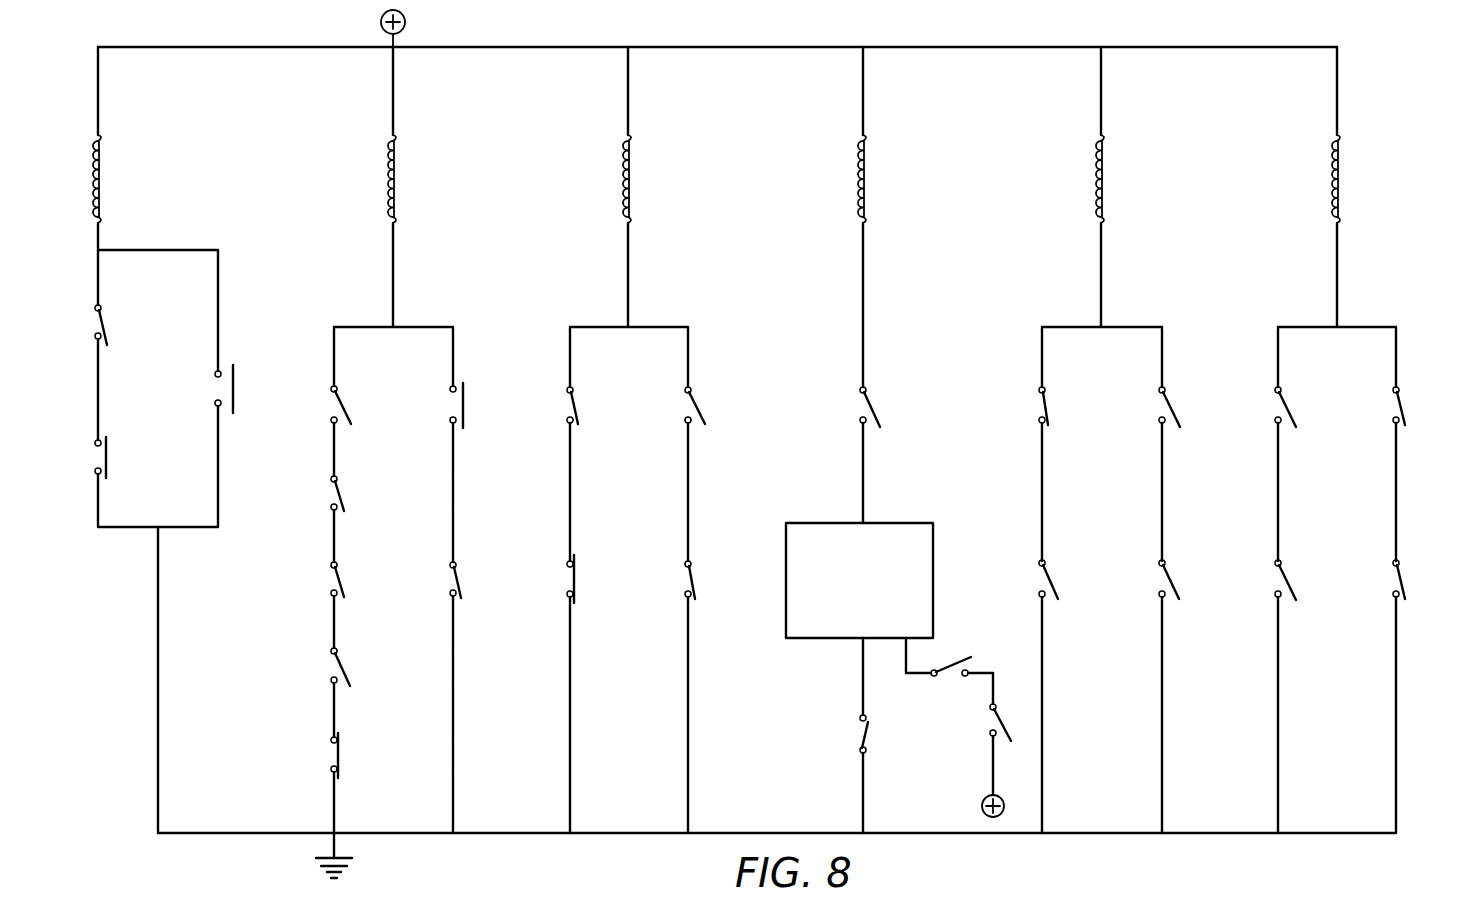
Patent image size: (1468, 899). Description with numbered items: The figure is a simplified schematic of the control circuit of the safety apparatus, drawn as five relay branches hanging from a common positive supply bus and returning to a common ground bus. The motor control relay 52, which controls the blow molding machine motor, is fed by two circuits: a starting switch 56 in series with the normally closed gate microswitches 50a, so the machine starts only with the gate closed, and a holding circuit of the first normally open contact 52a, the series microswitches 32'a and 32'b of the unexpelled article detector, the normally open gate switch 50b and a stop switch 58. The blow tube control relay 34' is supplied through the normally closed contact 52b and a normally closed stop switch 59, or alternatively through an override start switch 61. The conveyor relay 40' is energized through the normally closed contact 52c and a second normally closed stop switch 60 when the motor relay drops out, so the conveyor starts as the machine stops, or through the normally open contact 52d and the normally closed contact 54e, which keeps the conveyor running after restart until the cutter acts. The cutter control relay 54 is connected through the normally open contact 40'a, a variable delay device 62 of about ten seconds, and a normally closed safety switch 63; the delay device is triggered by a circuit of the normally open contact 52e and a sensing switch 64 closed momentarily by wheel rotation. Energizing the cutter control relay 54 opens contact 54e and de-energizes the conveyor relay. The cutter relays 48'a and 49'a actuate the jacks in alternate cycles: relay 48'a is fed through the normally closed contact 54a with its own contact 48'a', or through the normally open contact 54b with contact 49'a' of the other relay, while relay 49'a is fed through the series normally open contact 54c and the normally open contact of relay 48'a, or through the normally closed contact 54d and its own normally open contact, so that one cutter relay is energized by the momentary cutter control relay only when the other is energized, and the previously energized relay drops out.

The blow tube control relay 34' is at (128, 179).
The motor control relay 52 is at (401, 178).
The conveyor relay 40' is at (658, 179).
The cutter control relay 54 is at (871, 187).
The cutter relay 48'a is at (1138, 179).
The cutter relay 49'a is at (1374, 179).
The normally closed contact 52b is at (160, 338).
The override start switch 61 is at (235, 397).
The normally closed stop switch 59 is at (108, 448).
The first normally open contact 52a is at (399, 415).
The starting switch 56 is at (470, 402).
The microswitch 32'a is at (367, 493).
The microswitch 32'b is at (367, 579).
The normally closed microswitches 50a is at (510, 591).
The normally open switch 50b is at (397, 677).
The stop switch 58 is at (339, 744).
The normally closed contact 52c is at (629, 415).
The normally open contact 52d is at (753, 415).
The second normally closed stop switch 60 is at (583, 582).
The normally closed contact 54e is at (744, 590).
The normally open contact 40'a is at (899, 406).
The variable delay device 62 is at (923, 578).
The normally open contact 52e is at (1004, 647).
The sensing switch 64 is at (1003, 722).
The normally closed safety switch 63 is at (865, 736).
The normally closed contact 54a is at (1097, 415).
The normally open contact 54b is at (1227, 415).
The normally open contact 54c is at (1341, 415).
The normally closed contact 54d is at (1452, 415).
The normally open contact 48'a' is at (1080, 579).
The normally open contact 49'a' is at (1200, 579).